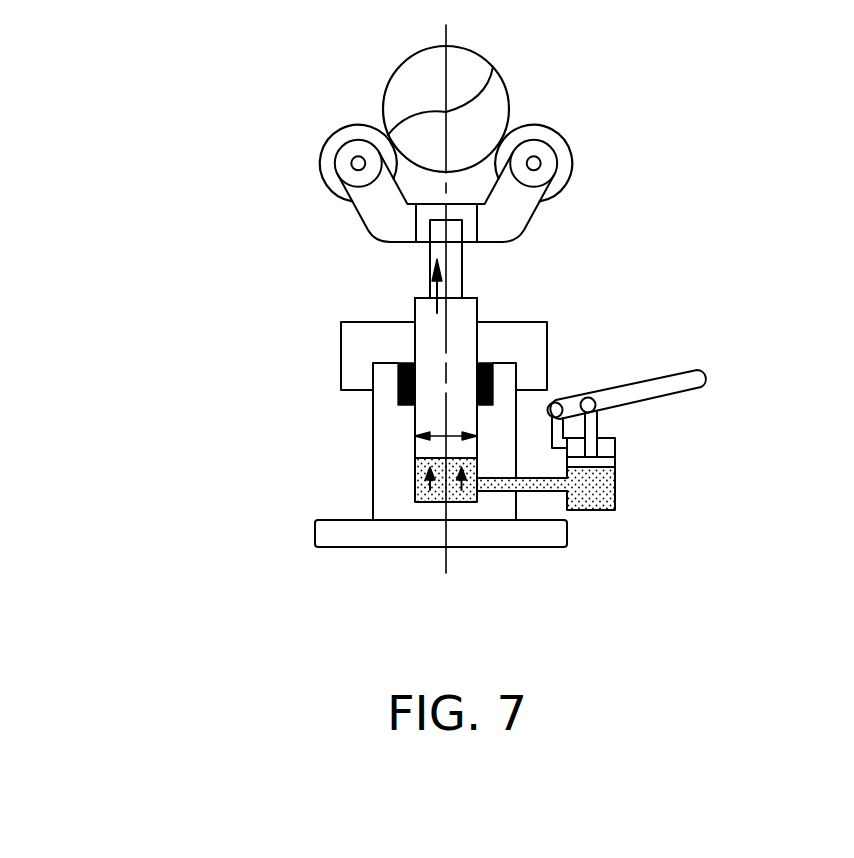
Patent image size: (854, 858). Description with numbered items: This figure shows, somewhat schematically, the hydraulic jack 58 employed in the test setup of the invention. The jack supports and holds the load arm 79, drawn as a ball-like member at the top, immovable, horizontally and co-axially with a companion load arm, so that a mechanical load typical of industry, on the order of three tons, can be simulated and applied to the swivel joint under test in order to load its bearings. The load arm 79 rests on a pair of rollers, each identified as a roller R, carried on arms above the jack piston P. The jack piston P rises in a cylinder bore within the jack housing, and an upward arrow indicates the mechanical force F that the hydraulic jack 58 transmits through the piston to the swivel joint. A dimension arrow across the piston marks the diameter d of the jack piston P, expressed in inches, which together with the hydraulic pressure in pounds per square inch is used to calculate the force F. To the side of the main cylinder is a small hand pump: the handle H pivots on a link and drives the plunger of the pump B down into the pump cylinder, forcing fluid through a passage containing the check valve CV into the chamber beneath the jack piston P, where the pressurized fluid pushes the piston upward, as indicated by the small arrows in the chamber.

The hydraulic jack 58 is at (205, 140).
The load arm 79 is at (508, 93).
The roller R is at (570, 160).
The mechanical force F is at (436, 300).
The jack piston P is at (465, 330).
The diameter of the jack piston d is at (441, 434).
The handle H is at (643, 378).
The plunger of the pump B is at (591, 431).
The check valve CV is at (537, 493).